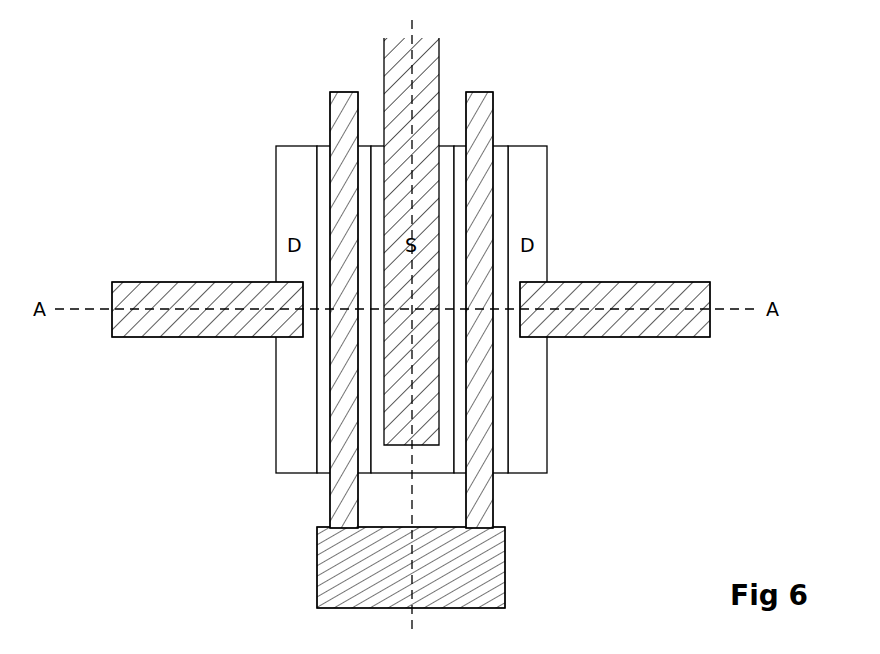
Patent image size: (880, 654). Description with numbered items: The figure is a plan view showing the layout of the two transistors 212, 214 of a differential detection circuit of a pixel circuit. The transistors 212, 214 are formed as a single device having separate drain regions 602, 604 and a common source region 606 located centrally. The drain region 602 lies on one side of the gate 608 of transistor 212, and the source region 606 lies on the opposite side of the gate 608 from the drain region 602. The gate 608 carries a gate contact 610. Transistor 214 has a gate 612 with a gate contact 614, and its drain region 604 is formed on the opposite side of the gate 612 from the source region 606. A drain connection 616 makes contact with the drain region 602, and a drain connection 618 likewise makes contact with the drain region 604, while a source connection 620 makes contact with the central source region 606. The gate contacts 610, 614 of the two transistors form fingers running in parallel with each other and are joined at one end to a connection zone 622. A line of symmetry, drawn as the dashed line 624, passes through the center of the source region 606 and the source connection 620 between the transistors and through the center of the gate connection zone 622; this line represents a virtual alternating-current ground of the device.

The transistor 212 is at (300, 118).
The transistor 214 is at (537, 118).
The drain region 602 is at (298, 462).
The drain region 604 is at (527, 464).
The common source region 606 is at (432, 462).
The gate 608 is at (320, 383).
The gate contact 610 is at (342, 185).
The gate 612 is at (500, 215).
The gate contact 614 is at (480, 165).
The drain connection 616 is at (148, 297).
The drain connection 618 is at (660, 293).
The source connection 620 is at (425, 62).
The connection zone 622 is at (505, 567).
The dashed line 624 is at (410, 26).